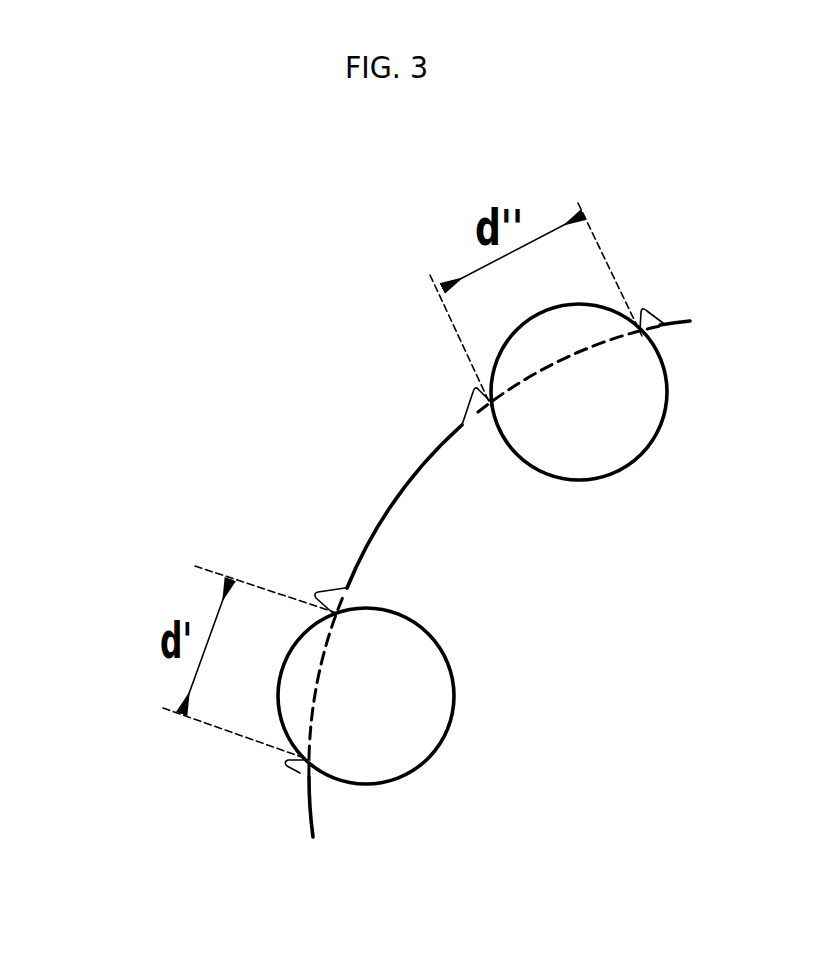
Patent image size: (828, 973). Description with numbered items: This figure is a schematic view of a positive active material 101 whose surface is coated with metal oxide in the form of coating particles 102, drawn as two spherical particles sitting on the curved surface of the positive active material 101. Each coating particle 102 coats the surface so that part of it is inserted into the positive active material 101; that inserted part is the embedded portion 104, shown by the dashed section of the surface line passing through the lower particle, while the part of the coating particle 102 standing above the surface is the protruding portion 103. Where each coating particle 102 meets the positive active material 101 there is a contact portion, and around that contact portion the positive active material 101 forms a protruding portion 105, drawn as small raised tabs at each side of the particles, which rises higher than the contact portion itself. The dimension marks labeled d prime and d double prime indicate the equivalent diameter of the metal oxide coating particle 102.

The positive active material 101 is at (442, 535).
The coating particle 102 is at (252, 772).
The protruding portion 103 is at (302, 708).
The embedded portion 104 is at (377, 743).
The protruding portion 105 is at (470, 399).